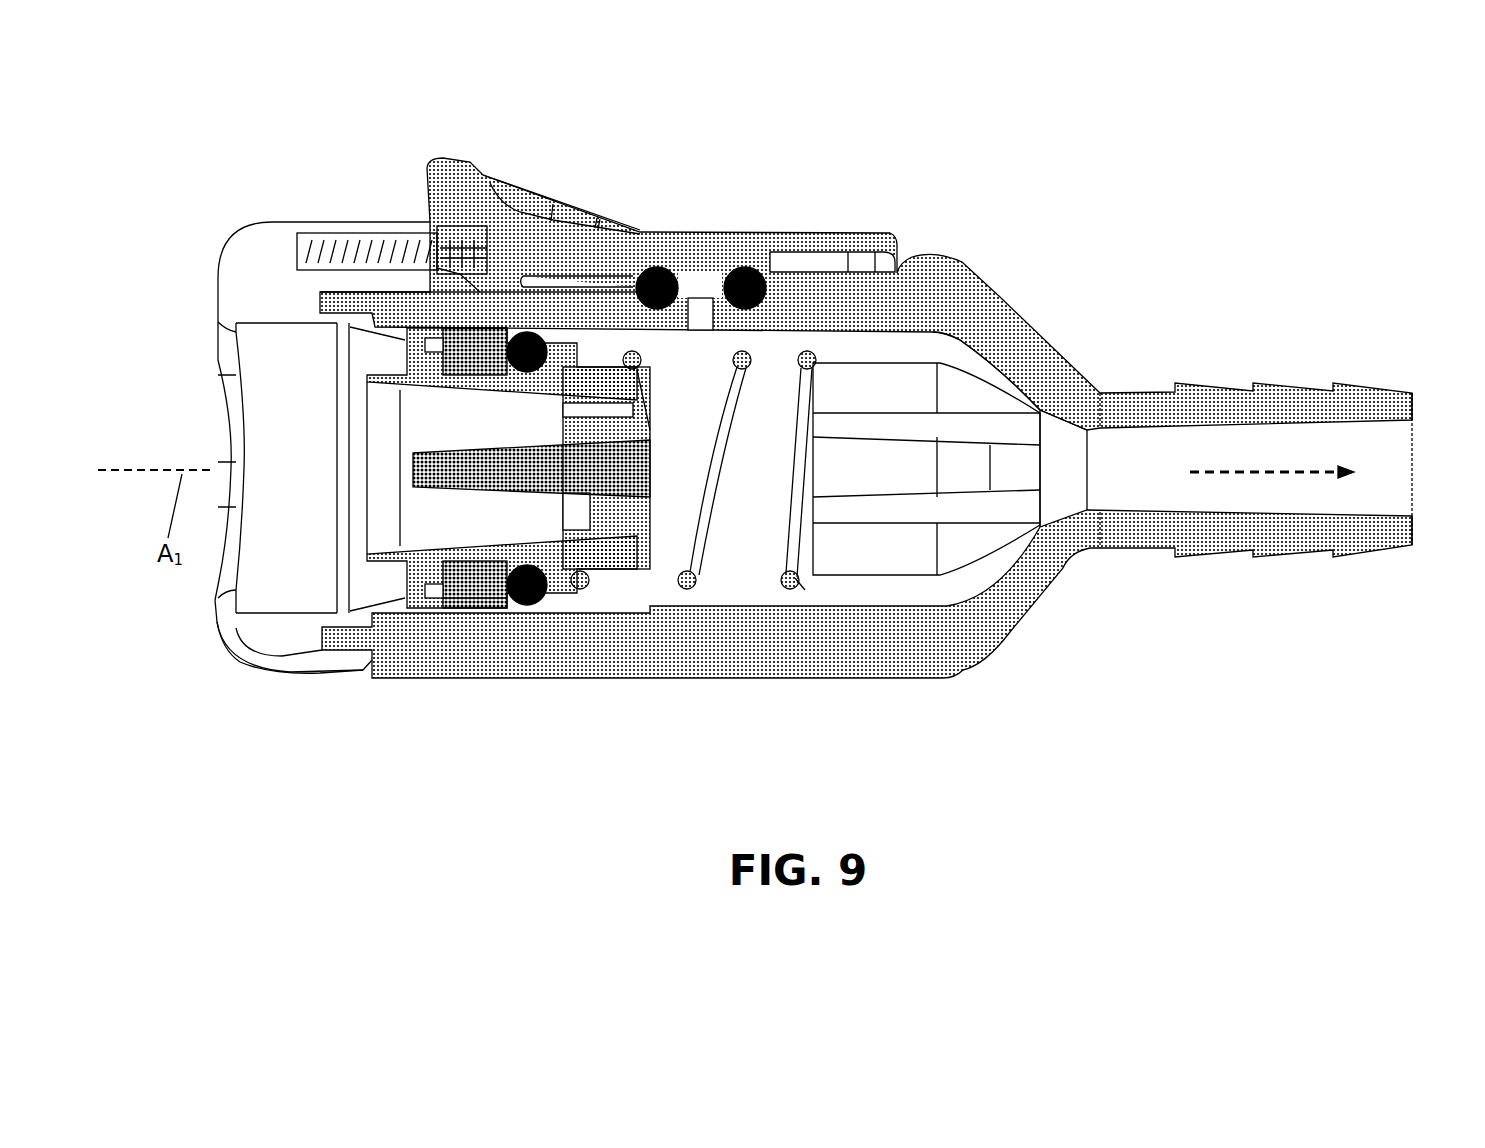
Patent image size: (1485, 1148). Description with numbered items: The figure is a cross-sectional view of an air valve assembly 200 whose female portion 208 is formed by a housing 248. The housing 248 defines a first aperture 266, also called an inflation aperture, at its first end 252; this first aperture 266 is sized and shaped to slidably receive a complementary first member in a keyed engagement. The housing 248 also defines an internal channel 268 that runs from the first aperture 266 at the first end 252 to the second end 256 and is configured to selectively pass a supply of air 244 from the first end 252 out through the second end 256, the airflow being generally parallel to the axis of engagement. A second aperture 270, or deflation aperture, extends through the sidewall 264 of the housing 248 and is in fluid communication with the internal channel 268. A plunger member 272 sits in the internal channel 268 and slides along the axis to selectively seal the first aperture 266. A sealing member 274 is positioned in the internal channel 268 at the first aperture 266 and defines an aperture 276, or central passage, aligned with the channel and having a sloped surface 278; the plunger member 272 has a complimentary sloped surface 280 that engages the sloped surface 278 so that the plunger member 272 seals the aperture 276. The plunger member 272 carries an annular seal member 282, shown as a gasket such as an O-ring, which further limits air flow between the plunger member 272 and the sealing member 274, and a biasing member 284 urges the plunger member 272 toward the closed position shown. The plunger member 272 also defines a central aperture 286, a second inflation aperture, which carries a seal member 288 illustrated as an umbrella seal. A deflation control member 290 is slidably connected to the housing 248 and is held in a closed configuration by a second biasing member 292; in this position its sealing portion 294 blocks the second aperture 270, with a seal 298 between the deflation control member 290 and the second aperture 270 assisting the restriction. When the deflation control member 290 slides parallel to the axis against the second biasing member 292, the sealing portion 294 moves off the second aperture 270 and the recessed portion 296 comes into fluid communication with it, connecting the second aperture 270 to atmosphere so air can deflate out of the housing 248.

The air valve assembly 200 is at (1090, 242).
The female portion 208 is at (207, 352).
The supply of air 244 is at (1263, 473).
The housing 248 is at (1011, 632).
The first end 252 is at (222, 624).
The second end 256 is at (1414, 462).
The sidewall 264 is at (942, 258).
The first aperture 266 is at (392, 574).
The internal channel 268 is at (744, 584).
The second aperture 270 is at (724, 316).
The plunger member 272 is at (565, 570).
The sealing member 274 is at (468, 600).
The aperture 276 is at (420, 568).
The sloped surface 278 is at (478, 563).
The complimentary sloped surface 280 is at (485, 365).
The annular seal member 282 is at (525, 607).
The biasing member 284 is at (795, 584).
The central aperture 286 is at (621, 497).
The seal member 288 is at (650, 512).
The deflation control member 290 is at (637, 232).
The second biasing member 292 is at (347, 240).
The sealing portion 294 is at (700, 272).
The recessed portion 296 is at (832, 255).
The seal 298 is at (747, 268).